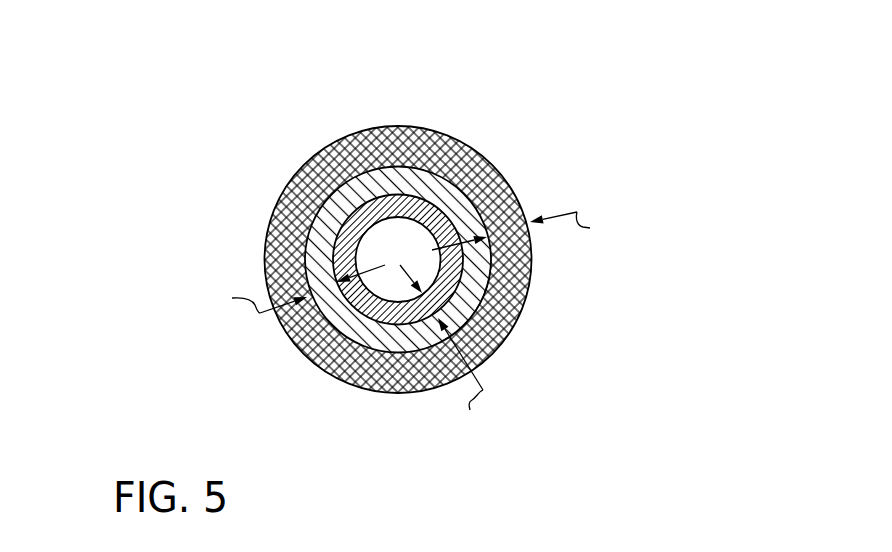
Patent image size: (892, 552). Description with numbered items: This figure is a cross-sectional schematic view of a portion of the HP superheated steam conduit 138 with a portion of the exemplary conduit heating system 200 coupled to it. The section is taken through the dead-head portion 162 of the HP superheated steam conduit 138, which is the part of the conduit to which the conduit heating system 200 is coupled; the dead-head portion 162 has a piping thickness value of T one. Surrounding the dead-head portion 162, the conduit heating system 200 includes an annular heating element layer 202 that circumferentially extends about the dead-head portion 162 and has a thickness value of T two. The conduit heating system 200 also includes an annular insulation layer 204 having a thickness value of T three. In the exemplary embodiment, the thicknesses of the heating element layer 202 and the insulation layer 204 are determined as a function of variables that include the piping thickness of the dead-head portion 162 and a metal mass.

The HP superheated steam conduit 138 is at (326, 169).
The conduit heating system 200 is at (421, 232).
The annular heating element layer 202 is at (330, 212).
The annular insulation layer 204 is at (488, 183).
The dead-head portion 162 is at (488, 288).